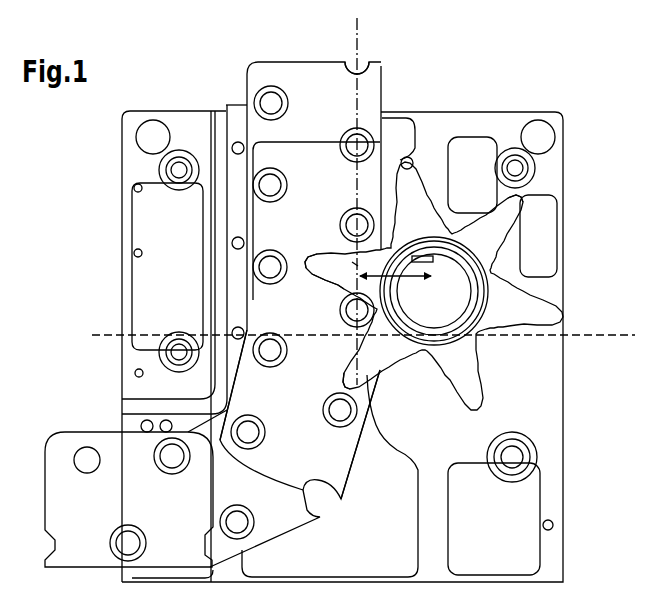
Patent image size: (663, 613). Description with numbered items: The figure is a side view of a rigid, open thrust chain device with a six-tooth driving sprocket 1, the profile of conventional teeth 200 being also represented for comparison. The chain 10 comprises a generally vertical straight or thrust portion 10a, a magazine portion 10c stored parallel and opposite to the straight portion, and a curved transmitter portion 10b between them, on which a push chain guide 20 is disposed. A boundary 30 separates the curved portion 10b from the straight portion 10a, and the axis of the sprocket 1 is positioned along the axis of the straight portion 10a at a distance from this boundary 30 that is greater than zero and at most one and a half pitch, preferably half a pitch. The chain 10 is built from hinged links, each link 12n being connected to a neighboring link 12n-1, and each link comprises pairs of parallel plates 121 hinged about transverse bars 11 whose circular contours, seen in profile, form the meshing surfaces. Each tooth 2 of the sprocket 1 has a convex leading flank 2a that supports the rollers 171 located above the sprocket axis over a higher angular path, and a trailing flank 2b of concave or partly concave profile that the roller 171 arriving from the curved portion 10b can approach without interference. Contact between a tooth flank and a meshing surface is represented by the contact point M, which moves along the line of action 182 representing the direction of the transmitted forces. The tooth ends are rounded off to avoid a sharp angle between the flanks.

The chain 10 is at (381, 58).
The straight portion 10a is at (390, 92).
The curved portion 10b is at (361, 476).
The magazine portion 10c is at (90, 427).
The line of action 182 is at (350, 56).
The push chain guide 20 is at (234, 102).
The link 12n is at (202, 332).
The link 12n-1 is at (165, 426).
The roller 171 is at (350, 126).
The boundary 30 is at (360, 335).
The tooth 2 is at (477, 418).
The leading flank 2a is at (432, 182).
The trailing flank 2b is at (306, 272).
The contact point M is at (352, 262).
The conventional teeth 200 is at (564, 292).
The sprocket 1 is at (535, 198).
The bar 11 is at (233, 513).
The plate 121 is at (307, 403).